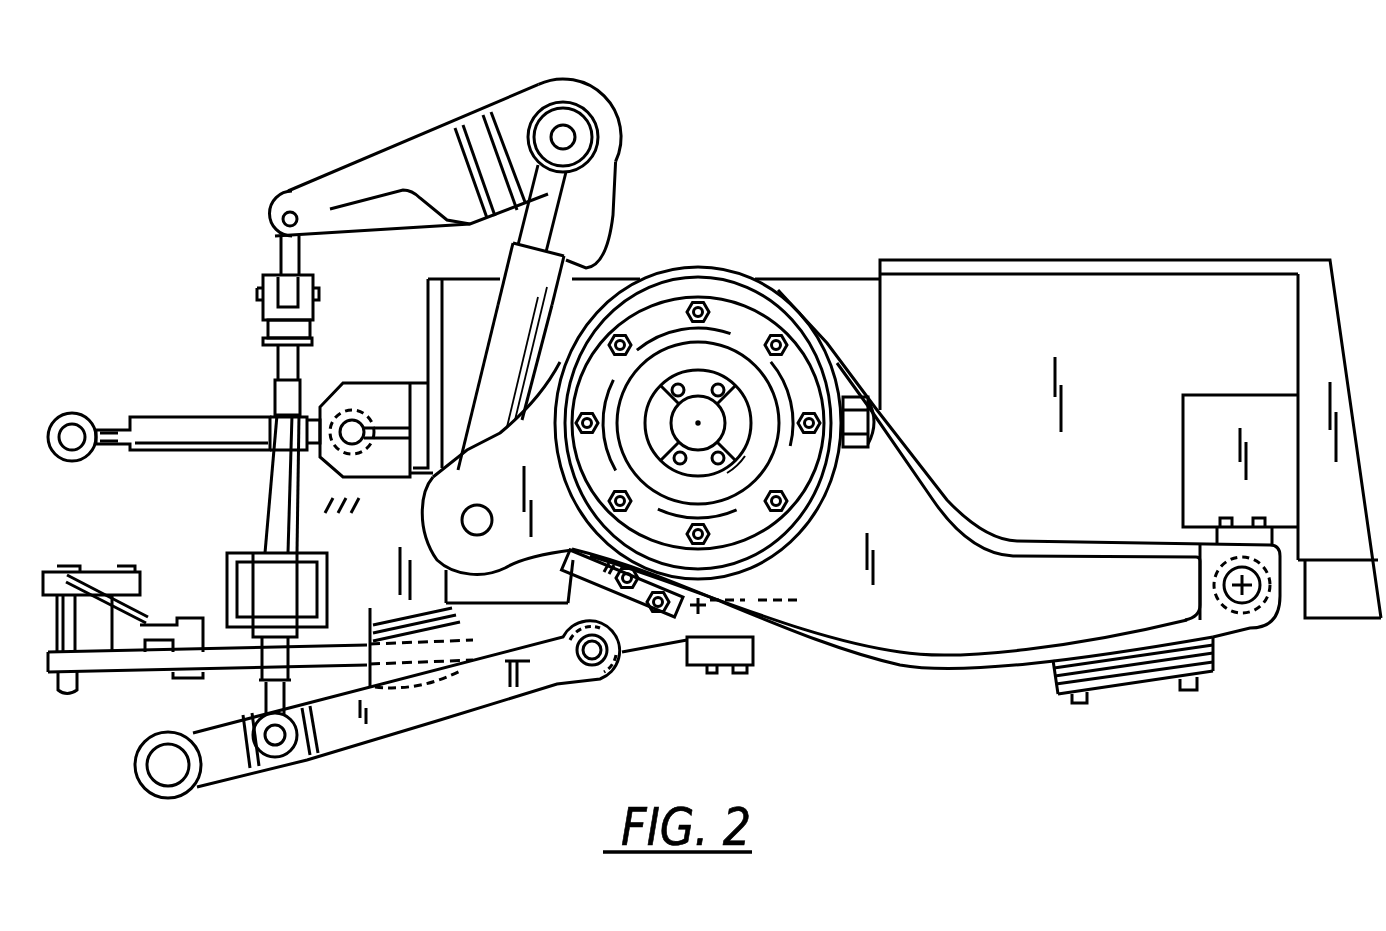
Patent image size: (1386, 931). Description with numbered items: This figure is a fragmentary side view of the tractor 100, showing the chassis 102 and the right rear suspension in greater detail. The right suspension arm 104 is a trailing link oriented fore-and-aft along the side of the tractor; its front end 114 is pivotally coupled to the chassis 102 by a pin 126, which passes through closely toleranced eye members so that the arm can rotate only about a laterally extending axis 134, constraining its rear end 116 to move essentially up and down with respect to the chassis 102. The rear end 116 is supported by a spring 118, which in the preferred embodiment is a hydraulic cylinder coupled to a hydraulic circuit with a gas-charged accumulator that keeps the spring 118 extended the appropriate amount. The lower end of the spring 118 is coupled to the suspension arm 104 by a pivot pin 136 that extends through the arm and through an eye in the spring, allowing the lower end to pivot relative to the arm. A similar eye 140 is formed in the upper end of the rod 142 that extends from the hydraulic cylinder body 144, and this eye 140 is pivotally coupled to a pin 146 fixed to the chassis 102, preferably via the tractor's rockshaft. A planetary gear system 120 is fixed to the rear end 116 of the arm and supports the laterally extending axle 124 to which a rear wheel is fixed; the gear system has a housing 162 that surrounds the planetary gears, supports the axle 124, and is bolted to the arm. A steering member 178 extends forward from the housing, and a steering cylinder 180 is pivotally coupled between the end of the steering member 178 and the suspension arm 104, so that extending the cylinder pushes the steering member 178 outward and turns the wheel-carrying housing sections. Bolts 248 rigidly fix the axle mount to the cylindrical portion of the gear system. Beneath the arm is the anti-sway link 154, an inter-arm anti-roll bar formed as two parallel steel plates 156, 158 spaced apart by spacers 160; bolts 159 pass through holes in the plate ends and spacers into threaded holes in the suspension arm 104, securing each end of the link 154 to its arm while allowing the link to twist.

The tractor 100 is at (936, 175).
The chassis 102 is at (858, 273).
The right suspension arm 104 is at (880, 640).
The front end 114 is at (1223, 623).
The rear end 116 is at (445, 504).
The spring 118 is at (500, 330).
The planetary gear system 120 is at (772, 540).
The axle 124 is at (710, 434).
The pin 126 is at (1252, 598).
The laterally extending axis 134 is at (1240, 583).
The pivot pin 136 is at (479, 535).
The eye 140 is at (583, 120).
The rod 142 is at (560, 187).
The hydraulic cylinder body 144 is at (503, 300).
The pin 146 is at (557, 133).
The anti-sway link 154 is at (1136, 684).
The plate 156 is at (1113, 678).
The plate 158 is at (1068, 663).
The bolts 159 is at (1187, 688).
The spacers 160 is at (1090, 667).
The housing 162 is at (723, 542).
The steering member 178 is at (860, 397).
The steering cylinder 180 is at (880, 415).
The bolts 248 is at (700, 310).